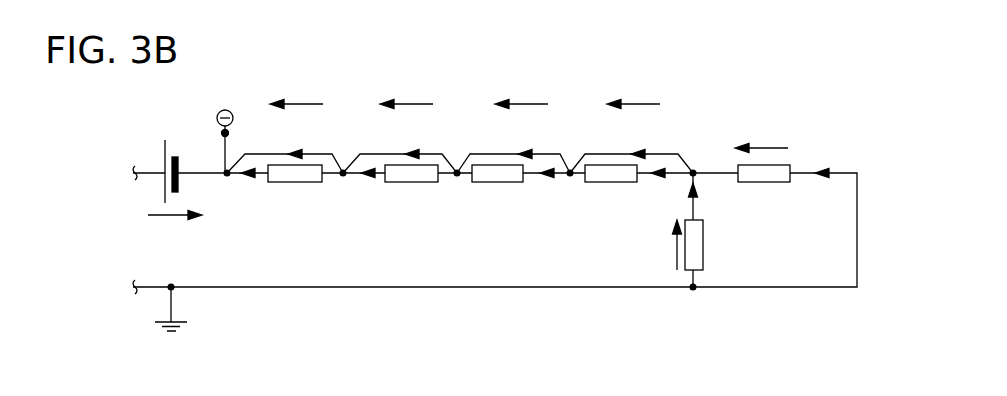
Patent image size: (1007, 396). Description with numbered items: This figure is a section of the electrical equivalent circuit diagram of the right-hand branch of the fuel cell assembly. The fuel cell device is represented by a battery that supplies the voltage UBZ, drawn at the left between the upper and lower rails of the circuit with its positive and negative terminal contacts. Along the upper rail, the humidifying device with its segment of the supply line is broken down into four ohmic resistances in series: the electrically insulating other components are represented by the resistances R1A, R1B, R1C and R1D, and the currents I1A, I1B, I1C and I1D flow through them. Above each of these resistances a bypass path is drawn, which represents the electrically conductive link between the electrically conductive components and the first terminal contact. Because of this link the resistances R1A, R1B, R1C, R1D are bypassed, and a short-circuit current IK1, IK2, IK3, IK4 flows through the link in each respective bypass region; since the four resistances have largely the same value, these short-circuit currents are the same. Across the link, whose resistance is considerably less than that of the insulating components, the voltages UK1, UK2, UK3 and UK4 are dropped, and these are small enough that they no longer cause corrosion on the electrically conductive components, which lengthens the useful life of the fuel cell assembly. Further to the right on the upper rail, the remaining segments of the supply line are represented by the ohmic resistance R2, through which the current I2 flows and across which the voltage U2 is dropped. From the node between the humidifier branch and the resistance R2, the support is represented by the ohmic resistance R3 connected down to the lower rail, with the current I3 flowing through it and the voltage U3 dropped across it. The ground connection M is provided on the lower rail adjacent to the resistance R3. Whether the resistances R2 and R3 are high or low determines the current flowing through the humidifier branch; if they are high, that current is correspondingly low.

The battery voltage UBZ is at (175, 234).
The voltage across link bypass region UK1 is at (296, 87).
The voltage across link bypass region UK2 is at (406, 87).
The voltage across link bypass region UK3 is at (521, 87).
The voltage across link bypass region UK4 is at (633, 87).
The short-circuit current IK1 is at (299, 135).
The short-circuit current IK2 is at (416, 135).
The short-circuit current IK3 is at (529, 135).
The short-circuit current IK4 is at (642, 135).
The current through resistance R1a I1A is at (252, 192).
The current through resistance R1b I1B is at (370, 192).
The current through resistance R1c I1C is at (551, 192).
The current through resistance R1d I1D is at (659, 192).
The ohmic resistance R1A is at (300, 194).
The ohmic resistance R1B is at (416, 194).
The ohmic resistance R1C is at (497, 194).
The ohmic resistance R1D is at (611, 194).
The voltage across resistance R2 U2 is at (761, 132).
The current through resistance R2 I2 is at (819, 192).
The ohmic resistance R2 is at (764, 194).
The voltage across resistance R3 U3 is at (666, 245).
The current through resistance R3 I3 is at (704, 195).
The ohmic resistance R3 is at (708, 245).
The ground connection M is at (183, 320).